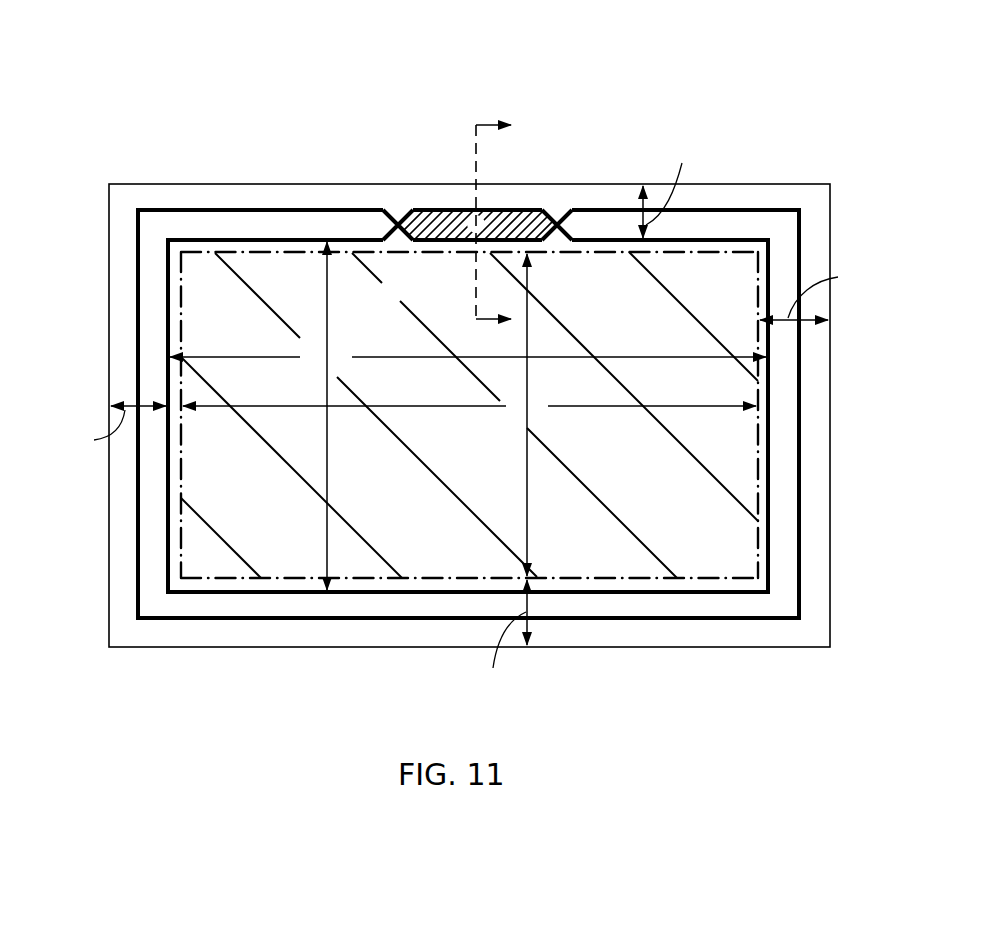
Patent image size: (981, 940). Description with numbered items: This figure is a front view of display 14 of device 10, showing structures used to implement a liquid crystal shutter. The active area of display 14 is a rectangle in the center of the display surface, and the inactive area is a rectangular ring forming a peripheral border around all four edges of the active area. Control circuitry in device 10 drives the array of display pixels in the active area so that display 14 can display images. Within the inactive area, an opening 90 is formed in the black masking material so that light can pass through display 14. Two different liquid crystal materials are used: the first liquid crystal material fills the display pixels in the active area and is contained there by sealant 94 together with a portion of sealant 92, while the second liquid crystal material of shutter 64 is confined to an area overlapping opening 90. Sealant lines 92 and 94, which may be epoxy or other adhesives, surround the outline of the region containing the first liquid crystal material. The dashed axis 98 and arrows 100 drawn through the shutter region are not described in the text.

The device 10 is at (751, 58).
The display 14 is at (745, 184).
The shutter 64 is at (543, 207).
The opening 90 is at (505, 210).
The sealant 92 is at (185, 208).
The sealant 94 is at (252, 240).
The axis 98 is at (474, 152).
The direction 100 is at (488, 121).